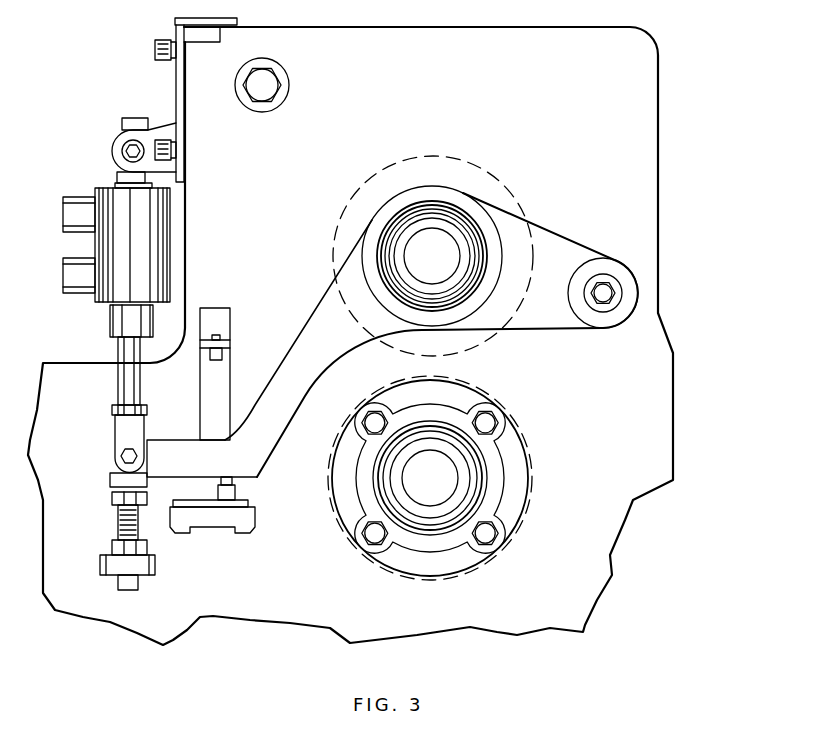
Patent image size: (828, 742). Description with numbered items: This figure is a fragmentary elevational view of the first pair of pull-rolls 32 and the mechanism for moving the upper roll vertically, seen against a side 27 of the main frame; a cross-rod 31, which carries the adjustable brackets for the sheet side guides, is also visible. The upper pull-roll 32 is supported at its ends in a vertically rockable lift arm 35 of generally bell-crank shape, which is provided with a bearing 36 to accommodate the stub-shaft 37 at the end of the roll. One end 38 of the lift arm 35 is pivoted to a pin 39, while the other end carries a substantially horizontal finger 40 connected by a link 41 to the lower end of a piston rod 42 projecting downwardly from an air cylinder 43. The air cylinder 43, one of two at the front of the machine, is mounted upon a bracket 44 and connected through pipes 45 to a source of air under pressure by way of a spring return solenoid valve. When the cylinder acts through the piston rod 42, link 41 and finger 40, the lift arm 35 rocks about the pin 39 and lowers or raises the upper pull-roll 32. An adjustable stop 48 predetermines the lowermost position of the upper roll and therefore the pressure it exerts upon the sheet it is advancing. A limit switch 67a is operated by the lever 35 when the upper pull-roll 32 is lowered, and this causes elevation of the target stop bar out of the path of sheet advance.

The sides 27 is at (650, 178).
The cross-rod 31 is at (280, 91).
The pull-rolls 32 is at (408, 167).
The lift arm 35 is at (340, 350).
The bearing 36 is at (448, 208).
The stub-shaft 37 is at (450, 243).
The end of lift arm 38 is at (537, 320).
The pin 39 is at (603, 291).
The finger 40 is at (230, 458).
The link 41 is at (125, 433).
The piston rod 42 is at (128, 387).
The air cylinder 43 is at (107, 192).
The bracket 44 is at (170, 127).
The pipes 45 is at (65, 268).
The adjustable stop 48 is at (118, 520).
The limit switch 67a is at (243, 518).